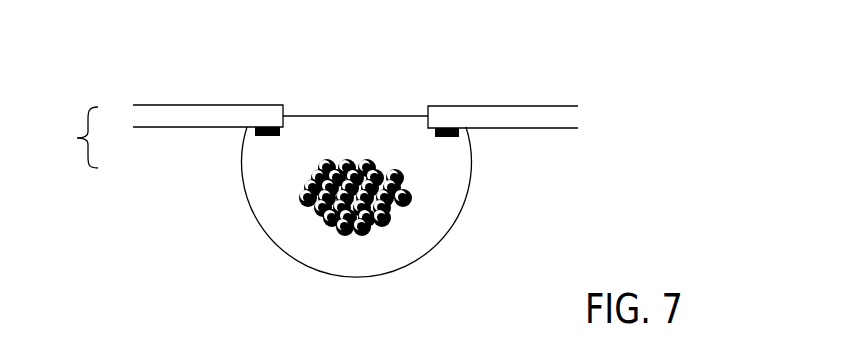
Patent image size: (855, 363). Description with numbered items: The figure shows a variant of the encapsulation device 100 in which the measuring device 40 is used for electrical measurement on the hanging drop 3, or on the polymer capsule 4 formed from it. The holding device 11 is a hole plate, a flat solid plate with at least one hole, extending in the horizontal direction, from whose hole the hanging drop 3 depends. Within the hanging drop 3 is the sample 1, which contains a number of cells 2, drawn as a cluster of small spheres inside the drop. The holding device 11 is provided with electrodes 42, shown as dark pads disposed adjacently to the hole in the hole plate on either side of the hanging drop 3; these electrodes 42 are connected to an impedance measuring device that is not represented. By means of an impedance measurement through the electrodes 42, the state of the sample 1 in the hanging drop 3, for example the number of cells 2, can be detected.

The encapsulation device 100 is at (690, 76).
The measuring device 40 is at (60, 149).
The holding device 11 is at (212, 117).
The electrodes 42 is at (445, 127).
The sample 1 is at (300, 211).
The cells 2 is at (320, 205).
The hanging drop 3 is at (412, 202).
The polymer capsule 4 is at (457, 210).